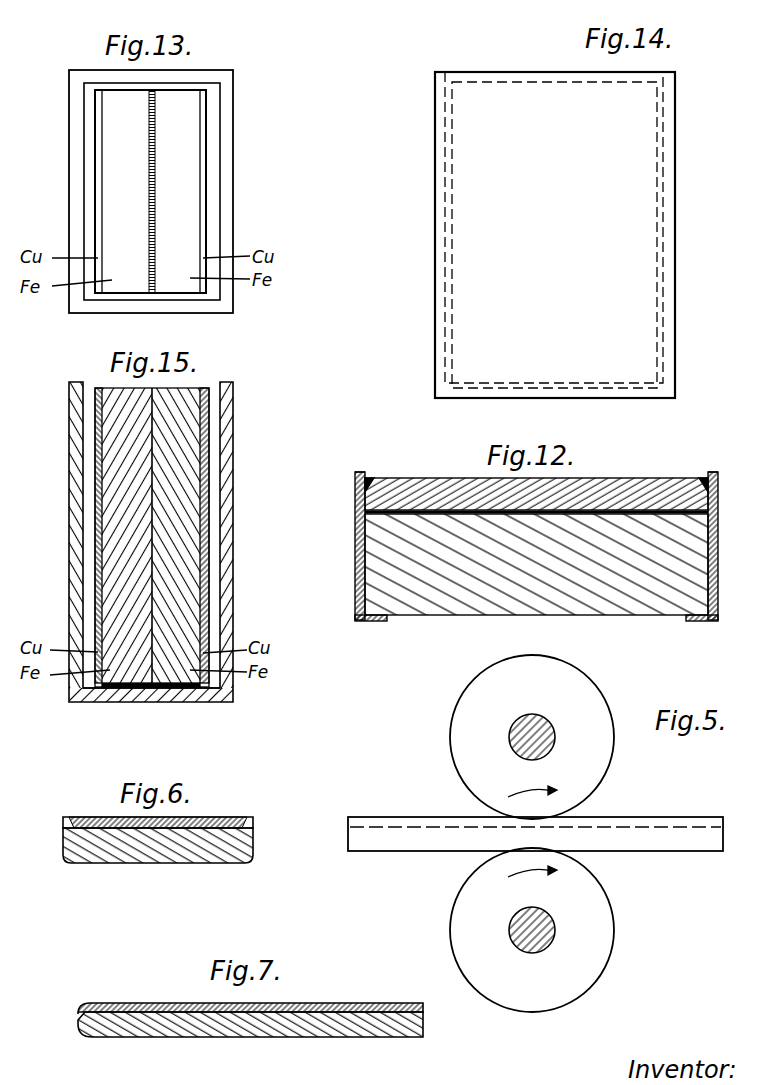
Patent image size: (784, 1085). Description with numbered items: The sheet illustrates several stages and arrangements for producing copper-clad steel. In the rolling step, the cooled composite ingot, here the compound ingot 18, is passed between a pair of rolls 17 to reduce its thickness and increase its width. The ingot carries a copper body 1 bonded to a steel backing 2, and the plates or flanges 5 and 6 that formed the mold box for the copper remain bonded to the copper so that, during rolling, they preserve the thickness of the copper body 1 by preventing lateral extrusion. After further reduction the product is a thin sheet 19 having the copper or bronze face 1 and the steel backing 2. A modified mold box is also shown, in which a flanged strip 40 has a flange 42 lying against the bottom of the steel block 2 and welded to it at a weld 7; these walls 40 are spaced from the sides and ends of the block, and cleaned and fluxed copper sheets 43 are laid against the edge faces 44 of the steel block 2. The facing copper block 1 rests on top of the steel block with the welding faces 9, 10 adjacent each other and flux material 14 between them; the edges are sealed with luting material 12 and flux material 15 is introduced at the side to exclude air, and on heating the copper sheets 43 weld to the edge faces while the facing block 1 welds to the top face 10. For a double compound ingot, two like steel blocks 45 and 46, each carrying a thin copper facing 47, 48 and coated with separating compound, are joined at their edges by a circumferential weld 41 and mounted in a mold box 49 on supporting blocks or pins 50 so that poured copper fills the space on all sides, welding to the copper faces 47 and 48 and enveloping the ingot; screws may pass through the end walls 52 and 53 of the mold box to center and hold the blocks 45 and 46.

In FIG. 12, the copper body 1 is at (640, 482).
In FIG. 6, the copper body 1 is at (222, 817).
In FIG. 7, the copper body 1 is at (355, 1003).
In FIG. 12, the steel backing 2 is at (612, 606).
In FIG. 6, the steel backing 2 is at (214, 857).
In FIG. 7, the steel backing 2 is at (345, 1030).
In FIG. 6, the flange 5 is at (63, 821).
In FIG. 5, the flange 6 is at (410, 795).
In FIG. 6, the flange 6 is at (250, 820).
In FIG. 12, the weld 7 is at (690, 621).
In FIG. 12, the welding face 9 is at (660, 520).
In FIG. 12, the welding face 10 is at (697, 511).
In FIG. 12, the sealing material 12 is at (362, 474).
In FIG. 12, the flux material 14 is at (408, 511).
In FIG. 14, the flux material 15 is at (543, 60).
In FIG. 12, the flux material 15 is at (357, 503).
In FIG. 5, the rolls 17 is at (608, 765).
In FIG. 5, the compound ingot 18 is at (664, 843).
In FIG. 6, the compound ingot 18 is at (143, 865).
In FIG. 7, the thin sheet 19 is at (425, 1020).
In FIG. 12, the flanged strip 40 is at (718, 556).
In FIG. 13, the circumferential weld 41 is at (155, 140).
In FIG. 15, the circumferential weld 41 is at (155, 388).
In FIG. 12, the flange 42 is at (702, 622).
In FIG. 12, the copper sheets 43 is at (358, 548).
In FIG. 12, the edge faces 44 is at (372, 582).
In FIG. 13, the steel block 45 is at (188, 201).
In FIG. 15, the steel block 45 is at (190, 459).
In FIG. 13, the steel block 46 is at (110, 204).
In FIG. 15, the steel block 46 is at (113, 484).
In FIG. 13, the copper facing 47 is at (203, 170).
In FIG. 15, the copper facing 47 is at (205, 437).
In FIG. 13, the copper facing 48 is at (98, 178).
In FIG. 15, the copper facing 48 is at (98, 457).
In FIG. 15, the mold box 49 is at (233, 409).
In FIG. 15, the supporting blocks 50 is at (95, 700).
In FIG. 14, the supporting blocks 50 is at (448, 390).
In FIG. 13, the end wall 52 is at (185, 313).
In FIG. 14, the end wall 52 is at (612, 398).
In FIG. 13, the end wall 53 is at (218, 70).
In FIG. 14, the end wall 53 is at (440, 72).